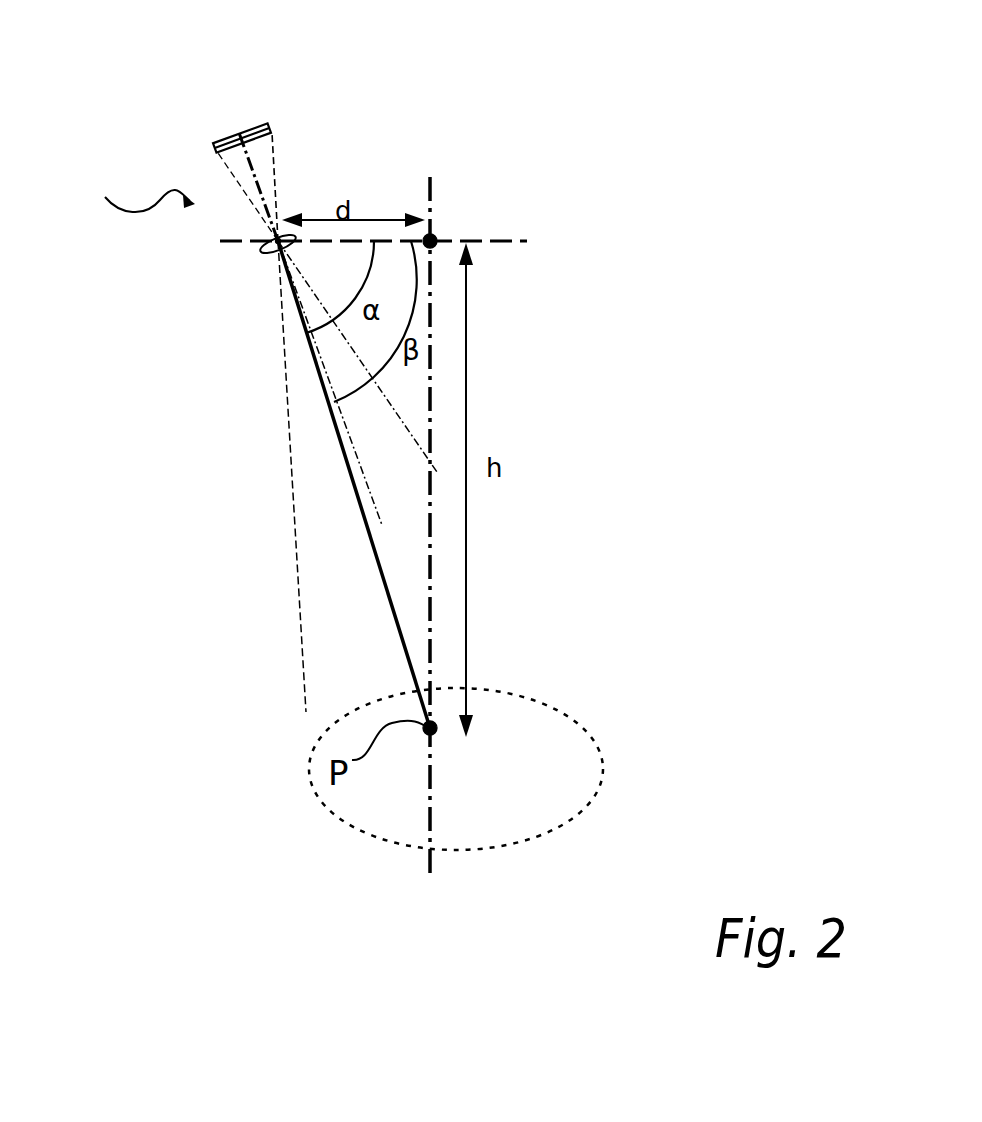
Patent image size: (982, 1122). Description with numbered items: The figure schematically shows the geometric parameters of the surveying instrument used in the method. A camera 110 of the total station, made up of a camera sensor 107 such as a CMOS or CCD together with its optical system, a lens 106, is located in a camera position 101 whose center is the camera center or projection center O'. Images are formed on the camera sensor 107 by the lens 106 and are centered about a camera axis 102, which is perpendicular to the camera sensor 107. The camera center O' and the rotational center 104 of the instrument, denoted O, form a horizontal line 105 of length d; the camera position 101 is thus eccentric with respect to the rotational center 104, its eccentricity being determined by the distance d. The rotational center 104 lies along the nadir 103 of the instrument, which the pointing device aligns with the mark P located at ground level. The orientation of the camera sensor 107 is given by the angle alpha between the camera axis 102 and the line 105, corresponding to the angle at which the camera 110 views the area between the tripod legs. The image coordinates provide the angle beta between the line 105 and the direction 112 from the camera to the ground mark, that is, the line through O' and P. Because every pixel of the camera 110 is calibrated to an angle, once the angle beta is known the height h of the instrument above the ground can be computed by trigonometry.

The camera position 101 is at (278, 243).
The camera axis 102 is at (352, 443).
The nadir 103 is at (430, 190).
The rotational center 104 is at (433, 236).
The horizontal line 105 is at (392, 240).
The lens 106 is at (278, 241).
The camera sensor 107 is at (252, 132).
The camera 110 is at (112, 193).
The direction from the camera to the ground mark 112 is at (362, 513).